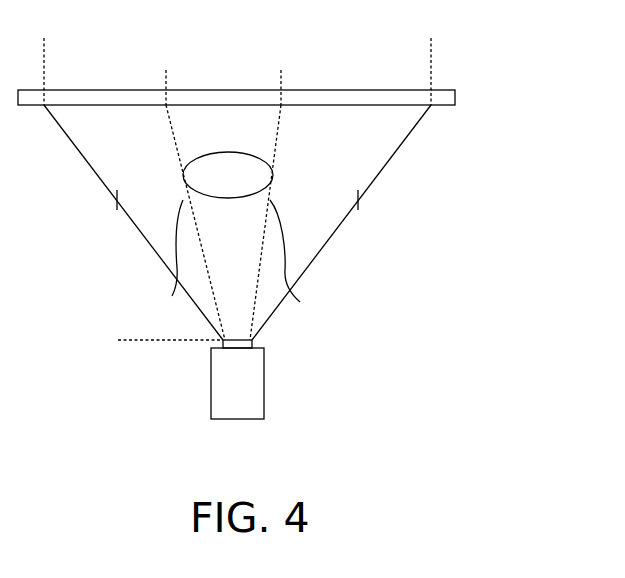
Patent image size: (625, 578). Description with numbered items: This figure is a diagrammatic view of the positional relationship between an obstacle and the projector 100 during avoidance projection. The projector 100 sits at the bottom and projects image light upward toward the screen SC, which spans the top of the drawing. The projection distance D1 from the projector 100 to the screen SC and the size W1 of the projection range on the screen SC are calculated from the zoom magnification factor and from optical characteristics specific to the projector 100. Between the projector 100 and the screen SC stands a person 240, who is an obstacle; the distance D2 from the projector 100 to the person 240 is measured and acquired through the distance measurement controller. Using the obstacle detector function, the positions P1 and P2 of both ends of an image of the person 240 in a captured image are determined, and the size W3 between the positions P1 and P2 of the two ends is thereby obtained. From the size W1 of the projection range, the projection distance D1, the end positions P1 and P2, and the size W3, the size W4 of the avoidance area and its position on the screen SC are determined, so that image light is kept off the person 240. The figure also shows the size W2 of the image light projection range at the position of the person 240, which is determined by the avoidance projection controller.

The screen SC is at (457, 97).
The person 240 is at (271, 160).
The projector 100 is at (265, 382).
The size of the projection range W1 is at (419, 51).
The size of the image light projection range in the position of the person W2 is at (129, 200).
The size between the positions of the two ends W3 is at (257, 208).
The size of the avoidance area W4 is at (269, 81).
The projection distance D1 is at (138, 117).
The distance from the projector to the person D2 is at (226, 212).
The position of one end of the image of the person P1 is at (168, 262).
The position of the other end of the image of the person P2 is at (299, 262).